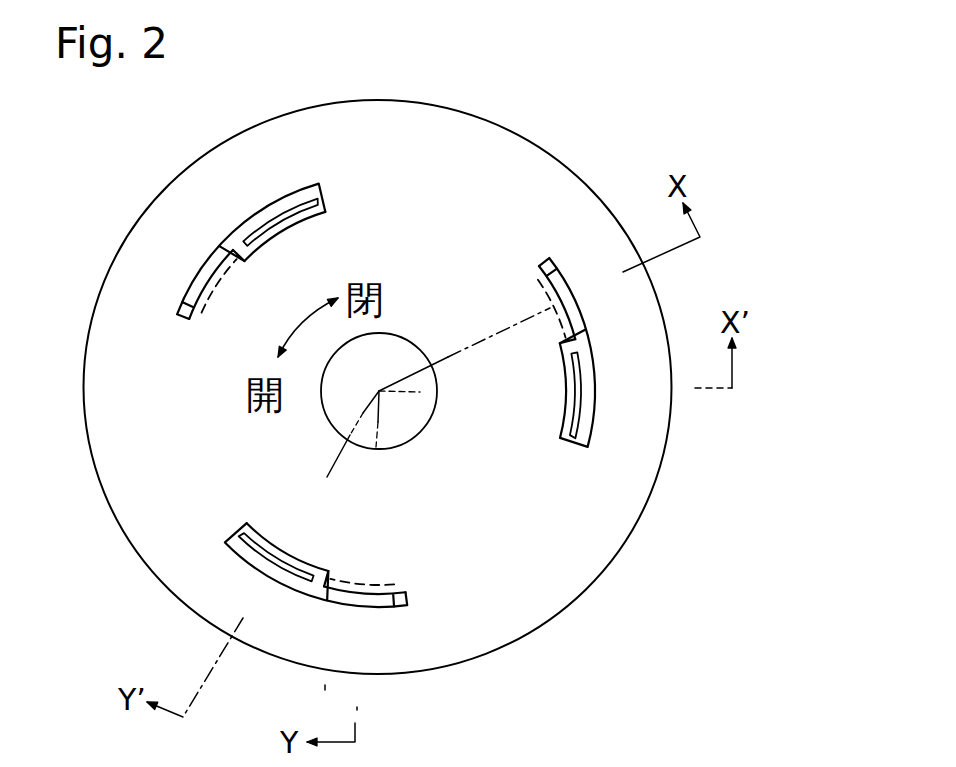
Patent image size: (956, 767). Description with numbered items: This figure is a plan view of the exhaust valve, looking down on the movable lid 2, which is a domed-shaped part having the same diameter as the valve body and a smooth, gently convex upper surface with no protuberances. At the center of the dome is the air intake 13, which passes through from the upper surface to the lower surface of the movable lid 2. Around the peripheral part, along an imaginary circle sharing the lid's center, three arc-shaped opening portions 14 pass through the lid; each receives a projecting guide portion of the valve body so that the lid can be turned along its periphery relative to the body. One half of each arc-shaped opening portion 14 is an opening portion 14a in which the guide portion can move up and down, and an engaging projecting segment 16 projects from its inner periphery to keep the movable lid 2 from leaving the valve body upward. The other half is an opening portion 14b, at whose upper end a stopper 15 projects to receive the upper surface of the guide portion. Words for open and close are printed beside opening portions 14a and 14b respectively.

The movable lid 2 is at (463, 152).
The air intake 13 is at (413, 415).
The arc-shaped opening portion 14 is at (233, 237).
The opening portion 14a is at (590, 403).
The opening portion 14b is at (563, 283).
The stopper 15 is at (192, 283).
The engaging projecting segment 16 is at (297, 220).